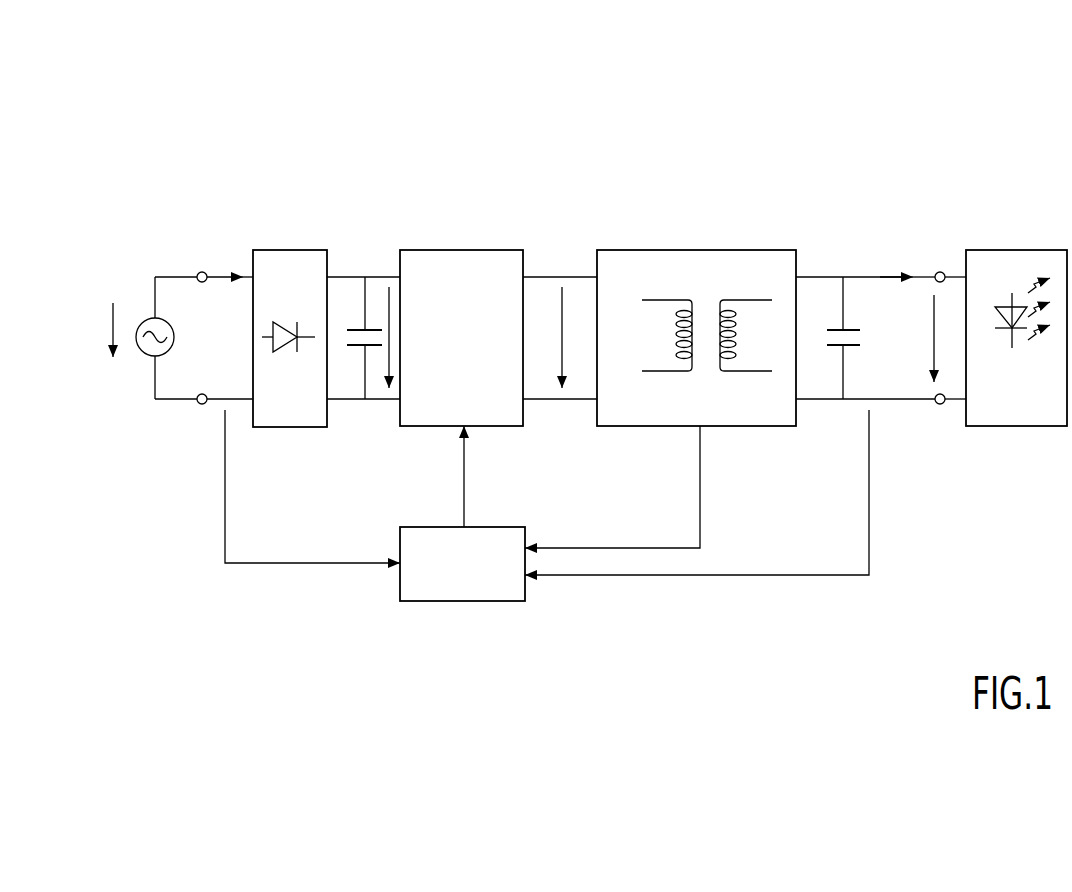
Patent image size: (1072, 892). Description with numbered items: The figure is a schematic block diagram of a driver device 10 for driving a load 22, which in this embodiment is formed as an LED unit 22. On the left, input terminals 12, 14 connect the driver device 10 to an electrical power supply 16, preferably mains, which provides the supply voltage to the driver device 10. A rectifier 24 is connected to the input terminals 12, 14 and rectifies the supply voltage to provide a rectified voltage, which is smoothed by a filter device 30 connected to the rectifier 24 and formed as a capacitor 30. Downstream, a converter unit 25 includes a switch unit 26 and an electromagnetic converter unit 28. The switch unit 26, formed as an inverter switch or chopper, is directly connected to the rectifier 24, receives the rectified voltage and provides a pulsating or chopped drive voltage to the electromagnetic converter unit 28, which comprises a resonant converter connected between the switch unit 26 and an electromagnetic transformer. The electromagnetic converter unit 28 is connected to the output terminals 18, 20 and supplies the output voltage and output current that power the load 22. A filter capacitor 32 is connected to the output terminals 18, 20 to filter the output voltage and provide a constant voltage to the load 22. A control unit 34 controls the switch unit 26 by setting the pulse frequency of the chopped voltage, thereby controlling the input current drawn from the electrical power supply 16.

The driver device 10 is at (566, 334).
The input terminal 12 is at (203, 271).
The input terminal 14 is at (202, 405).
The electrical power supply 16 is at (148, 322).
The output terminal 18 is at (942, 271).
The output terminal 20 is at (940, 405).
The load 22 is at (1017, 257).
The rectifier 24 is at (278, 257).
The converter unit 25 is at (580, 357).
The switch unit 26 is at (450, 257).
The electromagnetic converter unit 28 is at (665, 258).
The filter device 30 is at (350, 329).
The filter capacitor 32 is at (833, 329).
The control unit 34 is at (457, 578).